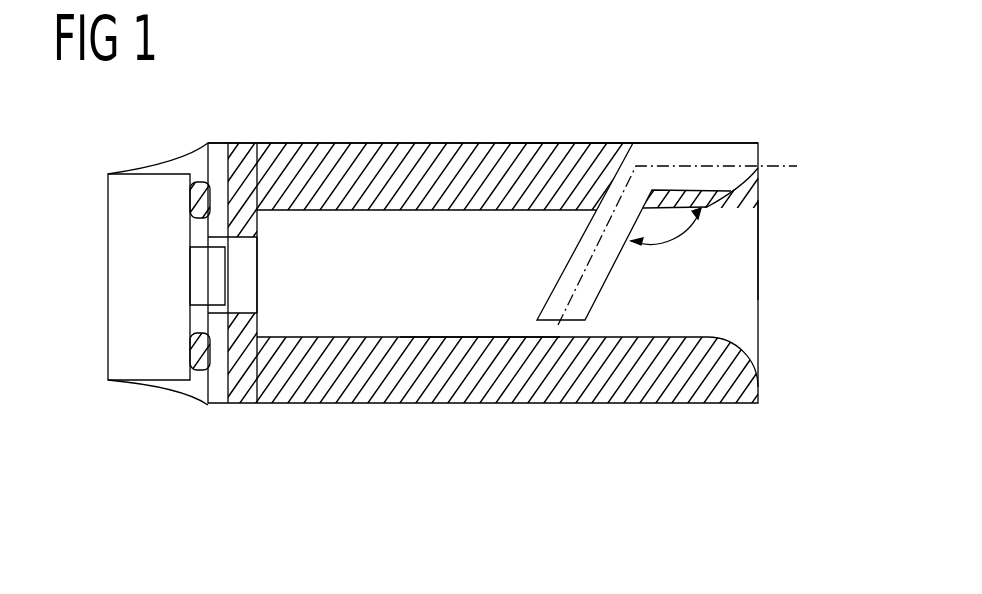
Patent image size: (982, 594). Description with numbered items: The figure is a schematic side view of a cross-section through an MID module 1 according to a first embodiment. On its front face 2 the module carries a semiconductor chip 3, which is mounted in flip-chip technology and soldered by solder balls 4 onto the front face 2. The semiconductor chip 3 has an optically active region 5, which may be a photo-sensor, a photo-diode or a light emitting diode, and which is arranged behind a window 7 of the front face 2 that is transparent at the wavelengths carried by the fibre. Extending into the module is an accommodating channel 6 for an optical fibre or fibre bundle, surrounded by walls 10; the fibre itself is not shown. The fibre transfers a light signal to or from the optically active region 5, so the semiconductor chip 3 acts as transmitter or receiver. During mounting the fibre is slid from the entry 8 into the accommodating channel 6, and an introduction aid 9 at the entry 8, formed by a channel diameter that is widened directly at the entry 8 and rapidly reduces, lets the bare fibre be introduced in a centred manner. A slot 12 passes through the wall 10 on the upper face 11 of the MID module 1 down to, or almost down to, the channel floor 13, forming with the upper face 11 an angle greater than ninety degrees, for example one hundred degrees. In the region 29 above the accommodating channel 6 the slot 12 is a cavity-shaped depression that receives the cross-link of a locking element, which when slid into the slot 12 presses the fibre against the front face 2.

The MID module 1 is at (815, 135).
The front face 2 is at (211, 206).
The semiconductor chip 3 is at (118, 305).
The solder balls 4 is at (190, 350).
The optically active region 5 is at (192, 260).
The accommodating channel 6 is at (533, 217).
The window 7 is at (257, 277).
The entry 8 is at (762, 247).
The introduction aid 9 is at (750, 345).
The walls 10 is at (438, 157).
The upper face 11 is at (566, 141).
The slot 12 is at (588, 292).
The channel floor 13 is at (408, 335).
The region above the accommodating channel 29 is at (633, 160).